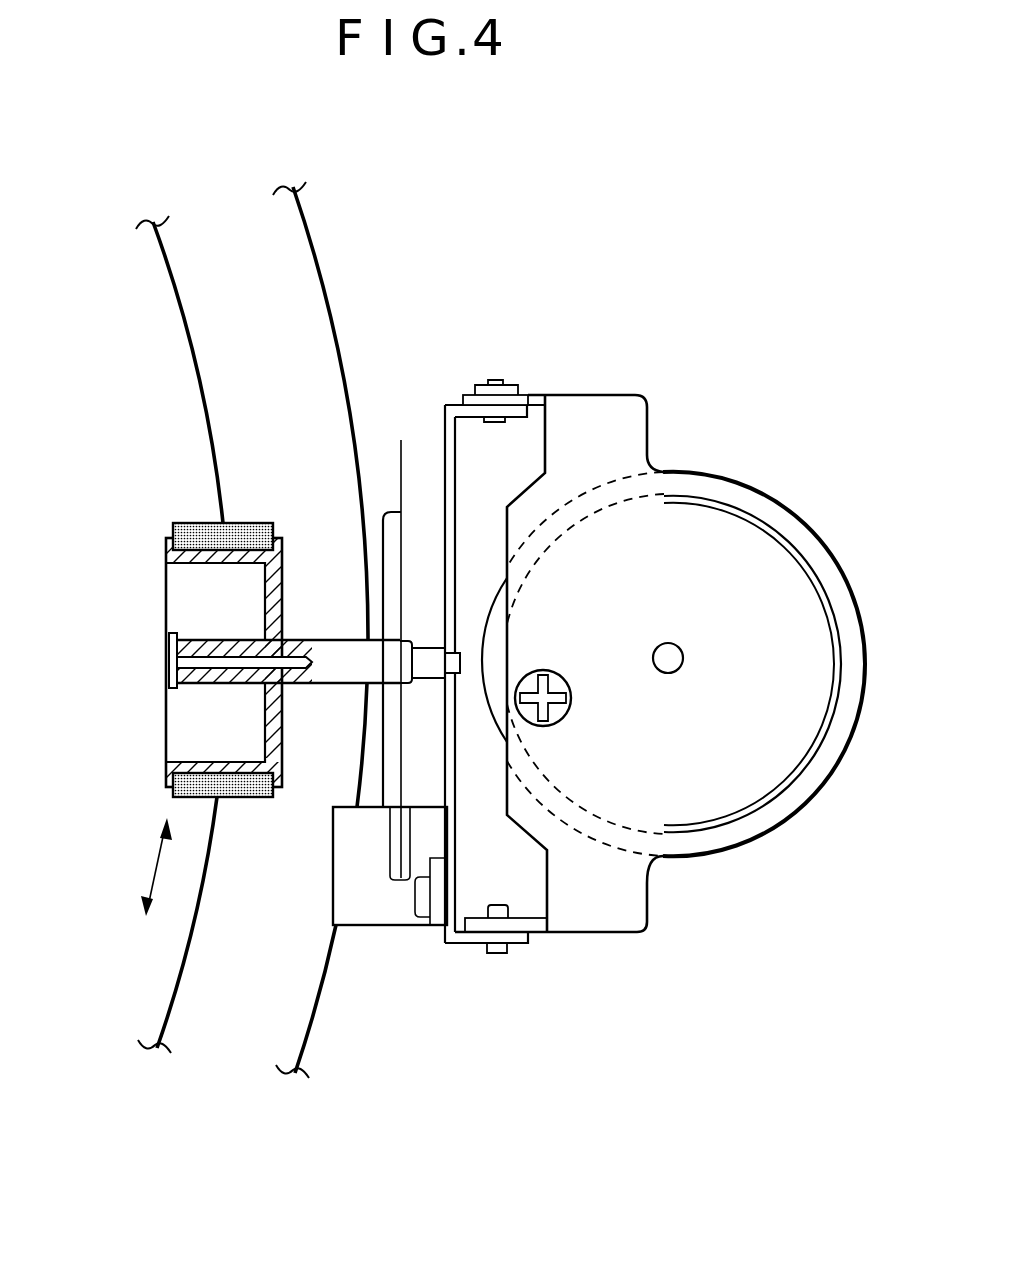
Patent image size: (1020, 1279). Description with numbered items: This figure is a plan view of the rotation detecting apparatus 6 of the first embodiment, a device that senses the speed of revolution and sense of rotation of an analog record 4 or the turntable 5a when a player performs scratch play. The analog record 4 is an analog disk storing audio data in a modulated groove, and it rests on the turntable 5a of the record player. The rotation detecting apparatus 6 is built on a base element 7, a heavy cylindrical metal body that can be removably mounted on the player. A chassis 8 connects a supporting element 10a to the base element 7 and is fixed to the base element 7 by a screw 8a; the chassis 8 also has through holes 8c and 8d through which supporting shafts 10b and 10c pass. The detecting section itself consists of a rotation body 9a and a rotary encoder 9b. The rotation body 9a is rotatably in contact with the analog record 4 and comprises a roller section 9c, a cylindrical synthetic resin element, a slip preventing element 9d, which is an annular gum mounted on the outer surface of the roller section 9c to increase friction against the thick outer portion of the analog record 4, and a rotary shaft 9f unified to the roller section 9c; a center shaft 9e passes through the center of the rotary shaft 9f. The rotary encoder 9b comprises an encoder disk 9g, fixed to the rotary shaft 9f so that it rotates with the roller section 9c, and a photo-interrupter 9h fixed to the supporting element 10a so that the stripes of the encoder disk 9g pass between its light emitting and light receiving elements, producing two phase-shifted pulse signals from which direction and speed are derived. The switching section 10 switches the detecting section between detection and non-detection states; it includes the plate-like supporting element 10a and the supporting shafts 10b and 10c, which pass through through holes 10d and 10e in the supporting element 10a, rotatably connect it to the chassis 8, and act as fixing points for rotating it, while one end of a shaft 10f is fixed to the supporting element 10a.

The analog record 4 is at (158, 975).
The turntable 5a is at (294, 1028).
The rotation detecting apparatus 6 is at (748, 409).
The base element 7 is at (830, 597).
The chassis 8 is at (770, 563).
The screw 8a is at (563, 687).
The through hole 8c is at (515, 383).
The through hole 8d is at (507, 913).
The rotation body 9a is at (146, 651).
The rotary encoder 9b is at (408, 768).
The roller section 9c is at (287, 547).
The slip preventing element 9d is at (187, 522).
The center shaft 9e is at (223, 660).
The rotary shaft 9f is at (330, 653).
The encoder disk 9g is at (402, 747).
The photo-interrupter 9h is at (395, 913).
The switching section 10 is at (527, 702).
The supporting element 10a is at (445, 430).
The supporting shaft 10b is at (495, 380).
The supporting shaft 10c is at (487, 950).
The through hole 10d is at (508, 948).
The through hole 10e is at (493, 422).
The shaft 10f is at (482, 657).